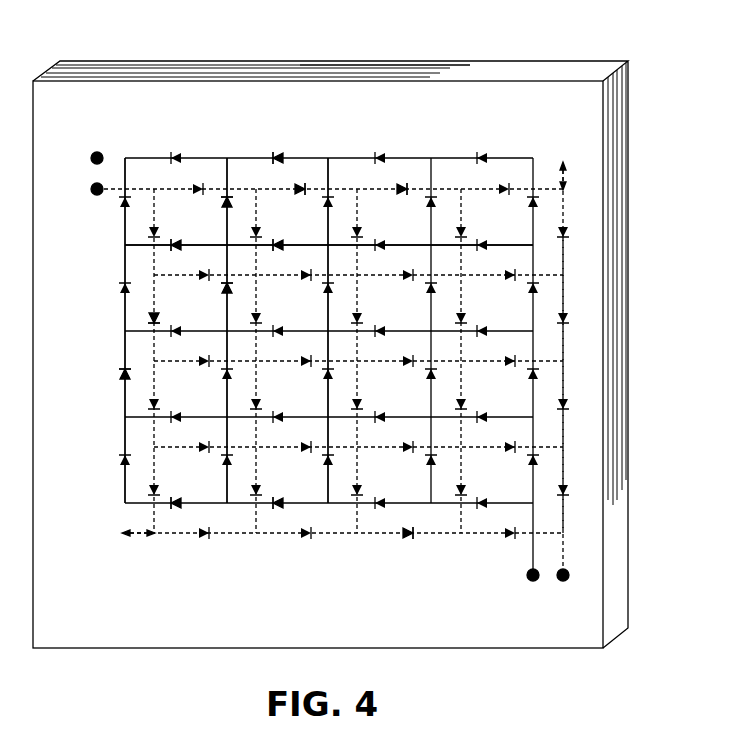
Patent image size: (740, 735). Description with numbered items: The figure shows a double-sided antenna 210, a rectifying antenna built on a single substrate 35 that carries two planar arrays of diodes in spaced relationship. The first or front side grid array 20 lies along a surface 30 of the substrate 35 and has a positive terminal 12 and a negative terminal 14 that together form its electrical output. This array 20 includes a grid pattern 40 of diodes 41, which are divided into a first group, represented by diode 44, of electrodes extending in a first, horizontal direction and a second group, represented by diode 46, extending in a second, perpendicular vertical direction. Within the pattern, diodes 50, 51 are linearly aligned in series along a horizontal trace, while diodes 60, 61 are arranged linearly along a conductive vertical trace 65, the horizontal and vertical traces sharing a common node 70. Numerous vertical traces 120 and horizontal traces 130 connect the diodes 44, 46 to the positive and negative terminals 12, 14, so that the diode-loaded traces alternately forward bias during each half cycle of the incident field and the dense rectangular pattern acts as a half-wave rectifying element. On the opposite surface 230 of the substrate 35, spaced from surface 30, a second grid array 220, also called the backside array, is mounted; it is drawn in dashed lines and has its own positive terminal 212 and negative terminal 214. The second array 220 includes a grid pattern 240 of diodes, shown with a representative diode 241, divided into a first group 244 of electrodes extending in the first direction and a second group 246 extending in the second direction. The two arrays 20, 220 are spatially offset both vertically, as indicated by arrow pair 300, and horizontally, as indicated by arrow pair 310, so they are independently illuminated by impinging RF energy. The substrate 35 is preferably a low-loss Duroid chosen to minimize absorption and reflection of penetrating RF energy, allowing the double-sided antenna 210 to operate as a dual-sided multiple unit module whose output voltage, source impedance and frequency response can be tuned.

The double-sided antenna 210 is at (666, 107).
The surface 30 is at (449, 93).
The opposite surface 230 is at (486, 95).
The substrate 35 is at (586, 70).
The grid array 20 is at (530, 150).
The negative terminal 14 is at (99, 152).
The positive terminal 212 is at (96, 198).
The positive terminal 12 is at (526, 576).
The negative terminal 214 is at (569, 578).
The arrow pair 300 is at (567, 175).
The arrow pair 310 is at (136, 538).
The second grid array 220 is at (565, 265).
The diodes 41 is at (280, 156).
The diode 241 is at (299, 186).
The grid pattern 40 is at (349, 157).
The grid pattern 240 is at (400, 186).
The conductive vertical trace 65 is at (227, 222).
The diode 61 is at (221, 201).
The diode 51 is at (281, 244).
The diode 50 is at (173, 246).
The common node 70 is at (226, 246).
The diode 60 is at (233, 289).
The first group 244 is at (149, 318).
The diode 44 is at (120, 376).
The vertical traces 120 is at (123, 485).
The horizontal traces 130 is at (200, 506).
The diode 46 is at (280, 506).
The second group 246 is at (406, 538).